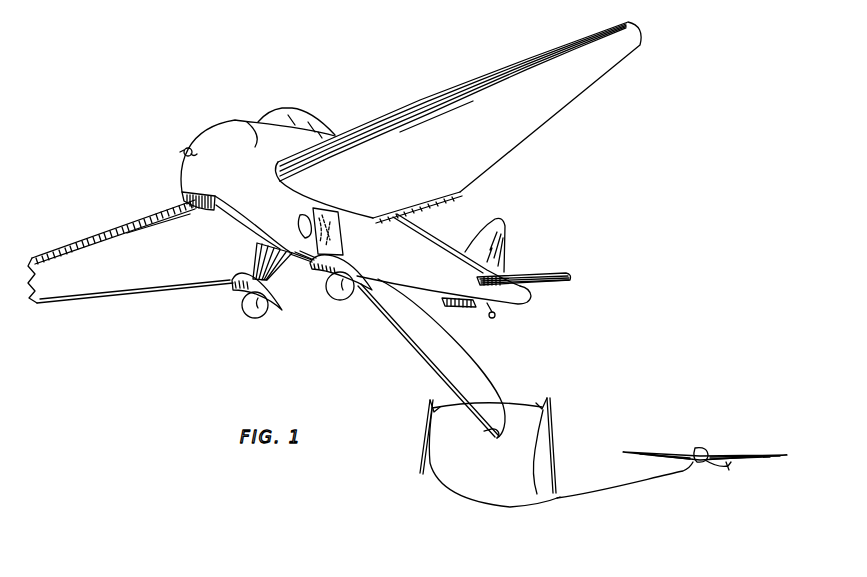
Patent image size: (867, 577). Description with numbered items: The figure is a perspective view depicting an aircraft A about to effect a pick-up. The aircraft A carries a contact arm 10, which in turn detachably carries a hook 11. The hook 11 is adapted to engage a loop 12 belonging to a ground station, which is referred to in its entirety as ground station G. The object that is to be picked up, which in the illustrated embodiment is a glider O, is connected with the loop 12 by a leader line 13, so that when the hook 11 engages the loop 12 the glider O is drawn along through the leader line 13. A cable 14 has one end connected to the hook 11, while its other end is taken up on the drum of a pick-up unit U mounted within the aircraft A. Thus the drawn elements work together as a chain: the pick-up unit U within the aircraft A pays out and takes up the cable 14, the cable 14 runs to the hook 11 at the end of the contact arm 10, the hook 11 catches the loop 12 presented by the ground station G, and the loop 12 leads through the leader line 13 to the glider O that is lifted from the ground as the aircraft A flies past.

The aircraft A is at (468, 203).
The pick-up unit U is at (300, 220).
The contact arm 10 is at (422, 358).
The cable 14 is at (470, 356).
The hook 11 is at (487, 437).
The ground station G is at (561, 413).
The loop 12 is at (516, 407).
The leader line 13 is at (614, 497).
The glider O is at (703, 438).